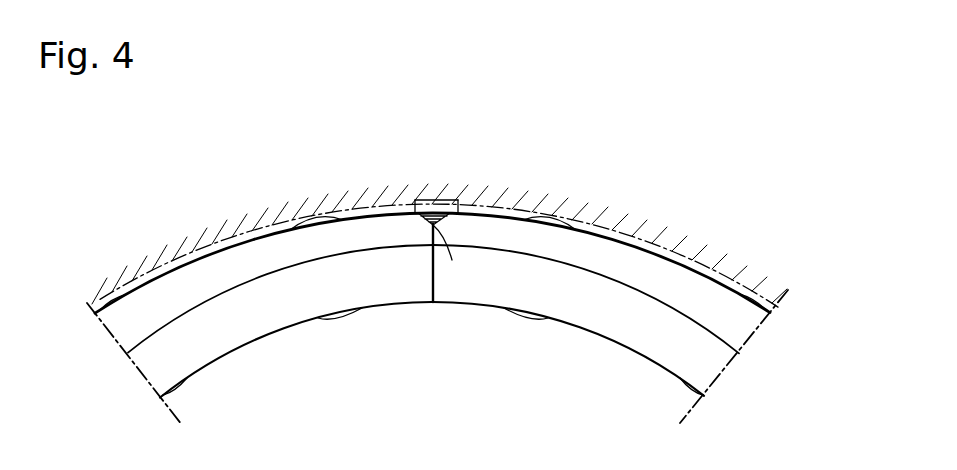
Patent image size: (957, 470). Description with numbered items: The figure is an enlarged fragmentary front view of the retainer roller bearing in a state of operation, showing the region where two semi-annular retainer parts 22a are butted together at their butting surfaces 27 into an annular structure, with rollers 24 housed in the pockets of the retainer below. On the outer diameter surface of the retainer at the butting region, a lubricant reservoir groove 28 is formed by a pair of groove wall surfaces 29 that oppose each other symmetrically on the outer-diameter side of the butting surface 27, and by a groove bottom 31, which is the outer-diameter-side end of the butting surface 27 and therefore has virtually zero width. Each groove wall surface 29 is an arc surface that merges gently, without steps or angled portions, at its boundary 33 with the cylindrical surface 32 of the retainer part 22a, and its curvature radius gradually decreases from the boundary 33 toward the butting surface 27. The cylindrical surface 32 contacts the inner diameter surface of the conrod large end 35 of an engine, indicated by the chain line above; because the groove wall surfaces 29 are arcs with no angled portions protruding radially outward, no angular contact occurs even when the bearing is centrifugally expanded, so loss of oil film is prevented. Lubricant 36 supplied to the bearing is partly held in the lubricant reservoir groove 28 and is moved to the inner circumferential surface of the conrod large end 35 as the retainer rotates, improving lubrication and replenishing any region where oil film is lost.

The retainer part 22a is at (153, 303).
The roller 24 is at (533, 322).
The butting surface 27 is at (430, 278).
The lubricant reservoir groove 28 is at (443, 205).
The groove wall surface 29 is at (412, 212).
The groove bottom 31 is at (435, 225).
The cylindrical surface 32 is at (228, 243).
The boundary 33 is at (363, 205).
The conrod large end 35 is at (580, 203).
The lubricant 36 is at (432, 220).